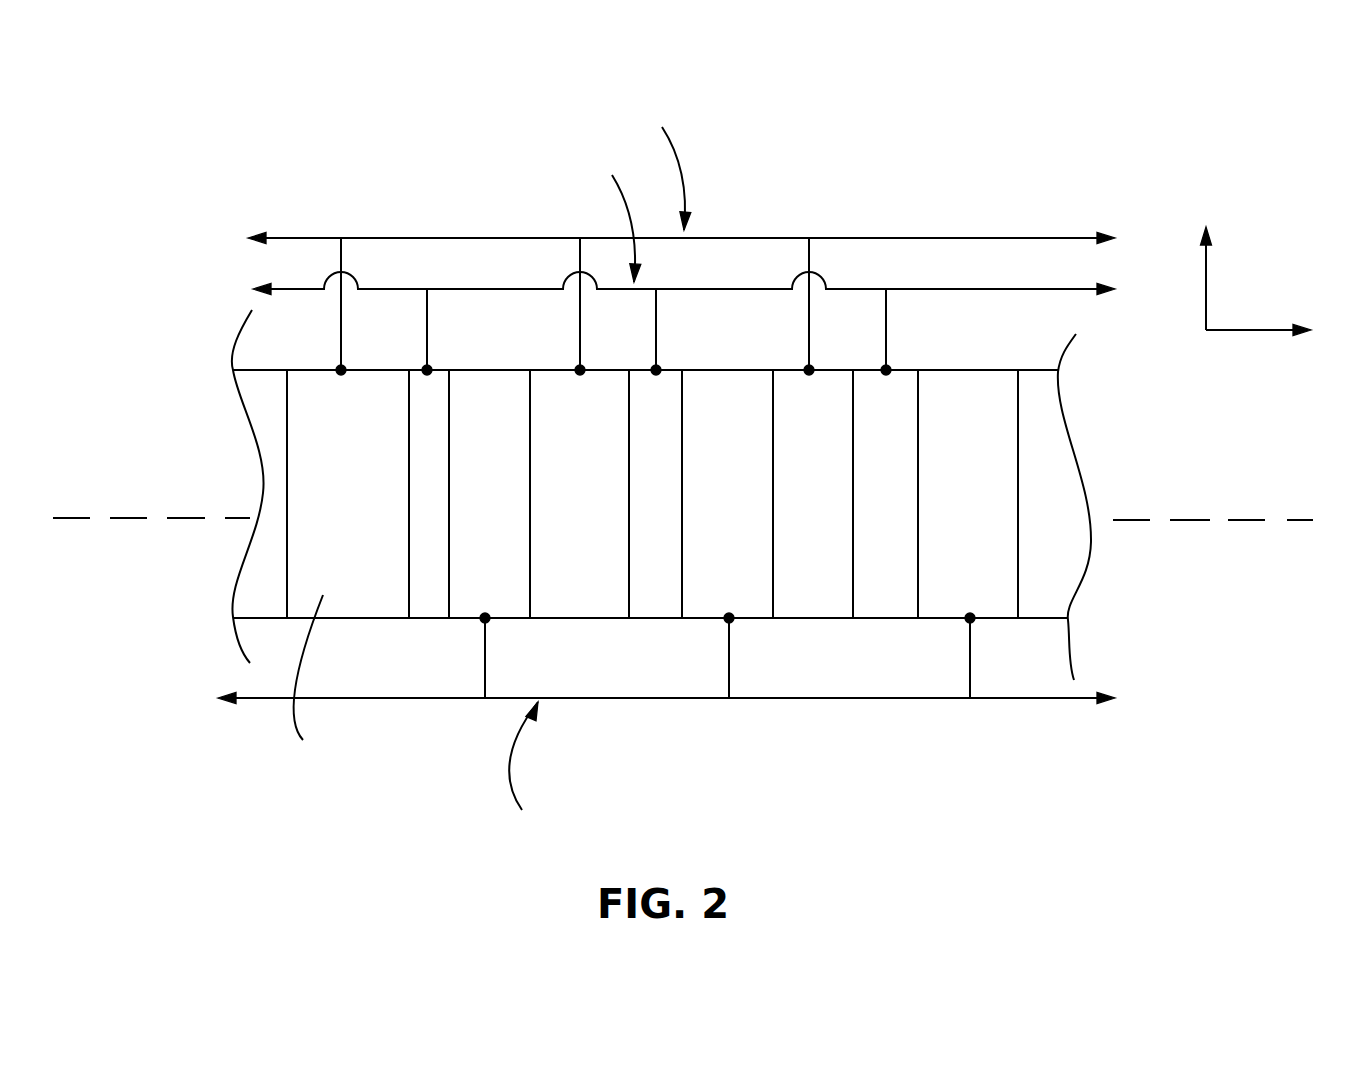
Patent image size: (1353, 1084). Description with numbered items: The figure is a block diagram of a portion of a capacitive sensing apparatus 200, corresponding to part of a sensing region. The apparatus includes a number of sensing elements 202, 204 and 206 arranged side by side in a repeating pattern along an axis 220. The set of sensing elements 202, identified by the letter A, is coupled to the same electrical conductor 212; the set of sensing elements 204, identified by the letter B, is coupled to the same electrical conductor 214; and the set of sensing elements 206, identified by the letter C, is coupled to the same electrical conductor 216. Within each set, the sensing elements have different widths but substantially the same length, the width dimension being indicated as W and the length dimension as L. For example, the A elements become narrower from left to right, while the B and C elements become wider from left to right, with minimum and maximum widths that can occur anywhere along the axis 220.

The capacitive sensing apparatus 200 is at (336, 92).
The sensing elements 202 is at (328, 481).
The sensing elements 204 is at (432, 595).
The sensing elements 206 is at (470, 481).
The electrical conductor 212 is at (935, 232).
The electrical conductor 214 is at (1084, 299).
The electrical conductor 216 is at (853, 702).
The axis 220 is at (82, 525).